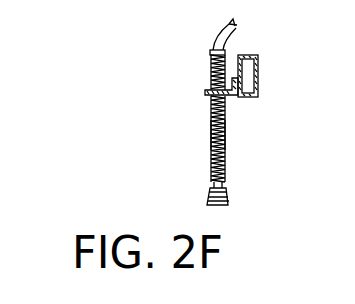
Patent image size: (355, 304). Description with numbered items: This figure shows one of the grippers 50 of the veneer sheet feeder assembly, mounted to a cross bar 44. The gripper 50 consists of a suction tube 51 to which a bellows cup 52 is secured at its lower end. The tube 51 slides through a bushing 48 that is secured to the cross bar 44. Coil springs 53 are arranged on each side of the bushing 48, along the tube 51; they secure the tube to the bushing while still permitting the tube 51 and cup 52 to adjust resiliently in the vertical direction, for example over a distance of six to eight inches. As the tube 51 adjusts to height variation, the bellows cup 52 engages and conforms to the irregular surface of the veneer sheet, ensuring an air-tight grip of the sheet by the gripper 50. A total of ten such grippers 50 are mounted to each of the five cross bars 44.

The cross bar 44 is at (259, 73).
The bushing 48 is at (208, 94).
The gripper 50 is at (205, 172).
The suction tube 51 is at (211, 140).
The bellows cup 52 is at (229, 196).
The coil spring 53 is at (214, 64).